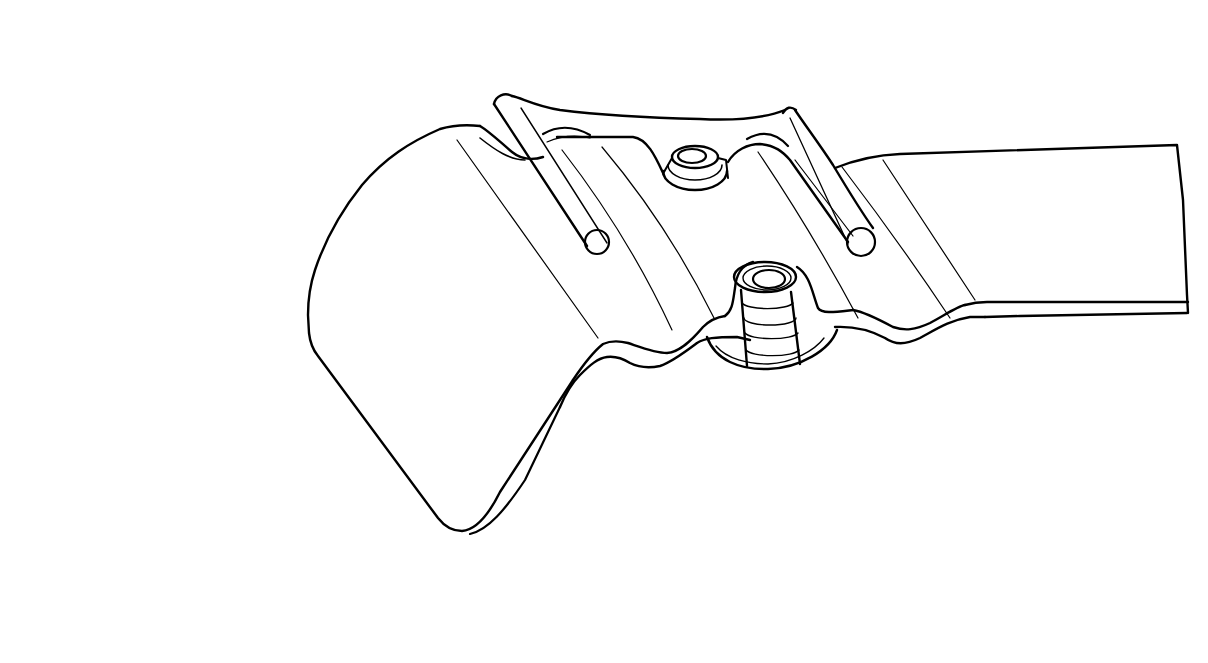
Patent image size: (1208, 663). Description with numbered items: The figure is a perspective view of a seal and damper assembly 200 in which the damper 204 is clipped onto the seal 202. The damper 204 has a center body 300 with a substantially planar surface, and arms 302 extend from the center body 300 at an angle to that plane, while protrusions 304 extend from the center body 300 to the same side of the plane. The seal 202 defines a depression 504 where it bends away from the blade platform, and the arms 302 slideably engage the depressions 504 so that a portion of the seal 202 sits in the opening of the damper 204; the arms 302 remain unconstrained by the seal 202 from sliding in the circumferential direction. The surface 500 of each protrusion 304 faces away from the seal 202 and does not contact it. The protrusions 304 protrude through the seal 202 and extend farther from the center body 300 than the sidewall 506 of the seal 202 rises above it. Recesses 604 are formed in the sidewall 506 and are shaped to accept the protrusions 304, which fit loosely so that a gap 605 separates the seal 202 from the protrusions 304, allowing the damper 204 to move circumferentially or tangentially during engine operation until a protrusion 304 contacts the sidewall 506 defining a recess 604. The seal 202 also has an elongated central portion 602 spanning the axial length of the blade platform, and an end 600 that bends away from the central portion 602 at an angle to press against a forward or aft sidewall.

The bracket assembly 200 is at (318, 62).
The seal 202 is at (1104, 178).
The damper 204 is at (573, 104).
The center body 300 is at (657, 155).
The arms 302 is at (478, 125).
The protrusions 304 is at (697, 153).
The surface of protrusion 500 is at (720, 153).
The depression 504 is at (653, 330).
The sidewall 506 is at (868, 318).
The end 600 is at (530, 453).
The central portion 602 is at (1085, 287).
The recesses 604 is at (702, 191).
The gap 605 is at (740, 290).